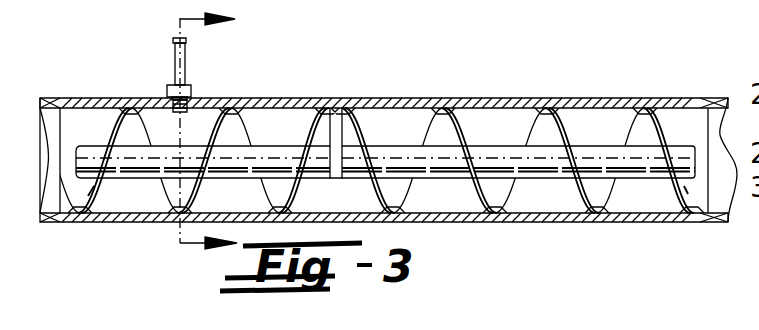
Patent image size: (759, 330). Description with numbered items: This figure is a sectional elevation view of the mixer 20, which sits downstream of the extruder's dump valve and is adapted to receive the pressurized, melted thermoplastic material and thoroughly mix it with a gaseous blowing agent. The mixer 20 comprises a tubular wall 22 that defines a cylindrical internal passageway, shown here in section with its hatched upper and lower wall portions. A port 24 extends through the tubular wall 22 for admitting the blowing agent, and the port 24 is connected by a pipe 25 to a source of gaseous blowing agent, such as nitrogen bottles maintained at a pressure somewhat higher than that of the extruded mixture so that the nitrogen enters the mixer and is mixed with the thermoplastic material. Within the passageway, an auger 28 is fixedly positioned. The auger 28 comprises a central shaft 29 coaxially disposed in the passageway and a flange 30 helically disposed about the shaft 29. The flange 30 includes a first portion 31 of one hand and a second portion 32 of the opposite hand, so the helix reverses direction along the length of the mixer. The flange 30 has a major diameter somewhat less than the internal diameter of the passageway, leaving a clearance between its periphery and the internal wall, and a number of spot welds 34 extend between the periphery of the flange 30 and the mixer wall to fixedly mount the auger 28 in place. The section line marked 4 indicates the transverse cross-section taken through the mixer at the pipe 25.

The mixer 20 is at (393, 98).
The tubular wall 22 is at (302, 98).
The port 24 is at (168, 88).
The pipe 25 is at (173, 52).
The auger 28 is at (473, 133).
The central shaft 29 is at (298, 122).
The flange 30 is at (239, 133).
The first portion 31 is at (102, 187).
The second portion 32 is at (685, 188).
The spot welds 34 is at (622, 113).
The section line 4- 4 is at (190, 133).